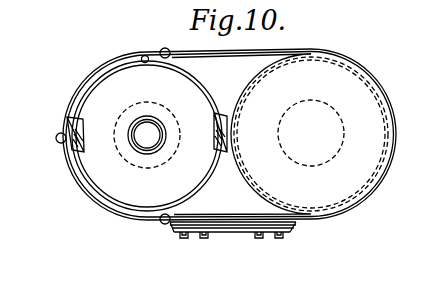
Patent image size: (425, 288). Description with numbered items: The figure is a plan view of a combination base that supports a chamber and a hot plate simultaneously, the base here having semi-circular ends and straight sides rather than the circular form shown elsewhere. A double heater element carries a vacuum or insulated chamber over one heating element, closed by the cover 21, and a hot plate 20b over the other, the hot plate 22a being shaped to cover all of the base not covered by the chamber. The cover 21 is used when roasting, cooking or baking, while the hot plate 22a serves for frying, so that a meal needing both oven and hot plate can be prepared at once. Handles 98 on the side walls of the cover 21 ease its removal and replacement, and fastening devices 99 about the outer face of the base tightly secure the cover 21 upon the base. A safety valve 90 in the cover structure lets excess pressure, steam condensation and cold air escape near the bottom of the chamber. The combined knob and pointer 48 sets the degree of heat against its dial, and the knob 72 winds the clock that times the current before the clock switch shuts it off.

The hot plate 20b is at (320, 50).
The cover 21 is at (100, 85).
The hot plate 22a is at (355, 186).
The combined knob and pointer 48 is at (181, 233).
The knob 72 is at (260, 239).
The safety valve 90 is at (122, 58).
The handles 98 is at (77, 121).
The fastening devices 99 is at (163, 48).